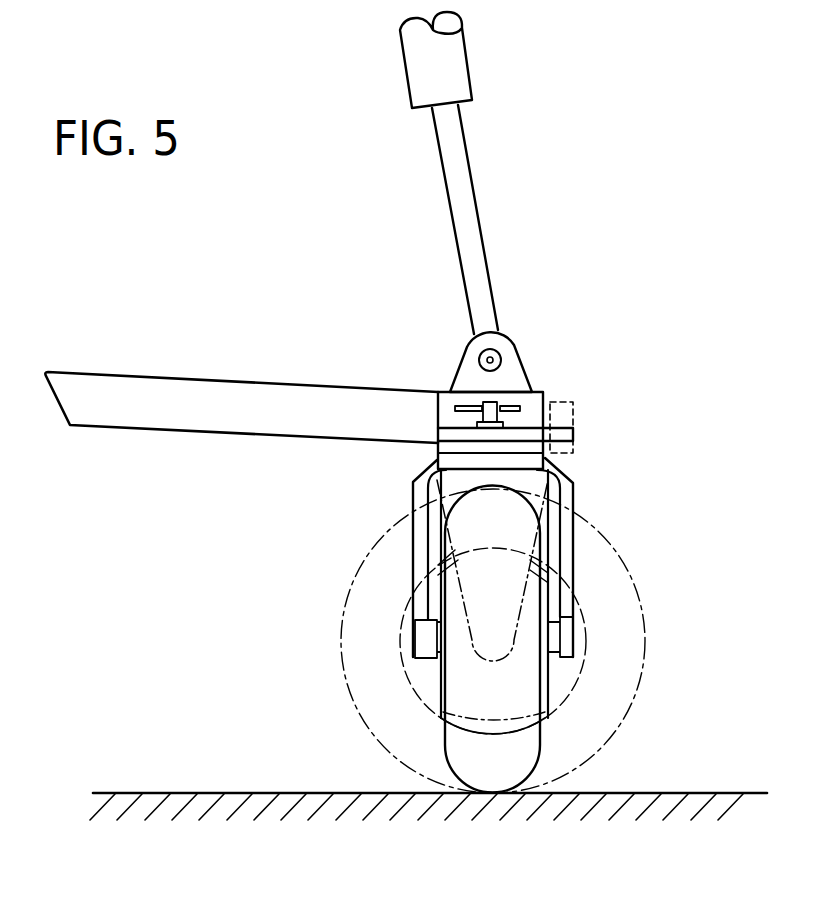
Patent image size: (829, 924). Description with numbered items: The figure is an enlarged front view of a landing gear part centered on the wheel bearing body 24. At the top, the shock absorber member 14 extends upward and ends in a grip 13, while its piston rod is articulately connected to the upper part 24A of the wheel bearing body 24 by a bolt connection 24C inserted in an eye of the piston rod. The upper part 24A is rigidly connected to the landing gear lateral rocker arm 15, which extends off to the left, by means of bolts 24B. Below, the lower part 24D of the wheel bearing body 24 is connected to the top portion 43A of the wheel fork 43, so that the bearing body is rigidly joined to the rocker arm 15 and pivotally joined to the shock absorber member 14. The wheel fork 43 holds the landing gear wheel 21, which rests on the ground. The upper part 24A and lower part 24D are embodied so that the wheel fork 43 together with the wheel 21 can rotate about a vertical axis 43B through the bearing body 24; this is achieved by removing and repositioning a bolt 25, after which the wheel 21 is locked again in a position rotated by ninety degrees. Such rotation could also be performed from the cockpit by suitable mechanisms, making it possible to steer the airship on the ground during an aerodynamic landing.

The handle grip 13 is at (452, 72).
The shock absorber member 14 is at (463, 218).
The landing gear lateral rocker arm 15 is at (172, 417).
The landing gear wheel 21 is at (497, 763).
The wheel bearing body 24 is at (582, 439).
The upper part of the wheel bearing body 24A is at (575, 428).
The bolts 24B is at (567, 405).
The bolt connection 24C is at (490, 360).
The lower part of the wheel bearing body 24D is at (437, 447).
The bolt 25 is at (477, 410).
The wheel fork 43 is at (565, 493).
The top portion of the fork 43A is at (517, 460).
The vertical axis 43B is at (490, 692).